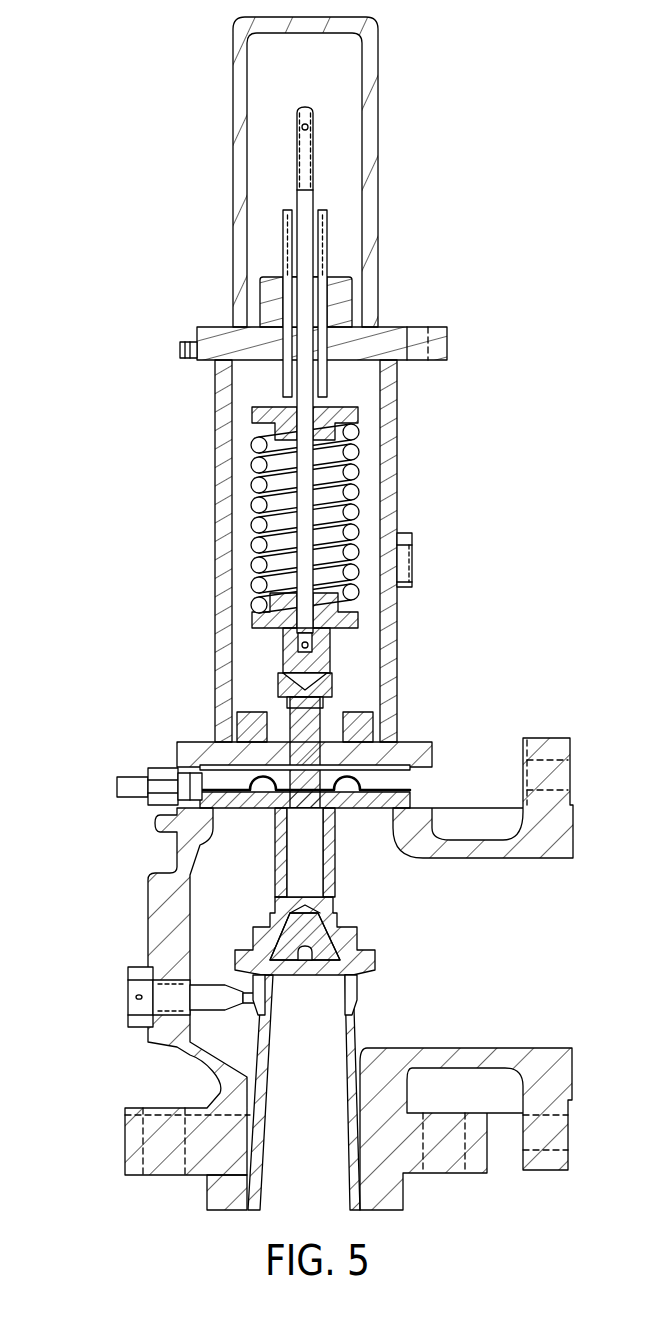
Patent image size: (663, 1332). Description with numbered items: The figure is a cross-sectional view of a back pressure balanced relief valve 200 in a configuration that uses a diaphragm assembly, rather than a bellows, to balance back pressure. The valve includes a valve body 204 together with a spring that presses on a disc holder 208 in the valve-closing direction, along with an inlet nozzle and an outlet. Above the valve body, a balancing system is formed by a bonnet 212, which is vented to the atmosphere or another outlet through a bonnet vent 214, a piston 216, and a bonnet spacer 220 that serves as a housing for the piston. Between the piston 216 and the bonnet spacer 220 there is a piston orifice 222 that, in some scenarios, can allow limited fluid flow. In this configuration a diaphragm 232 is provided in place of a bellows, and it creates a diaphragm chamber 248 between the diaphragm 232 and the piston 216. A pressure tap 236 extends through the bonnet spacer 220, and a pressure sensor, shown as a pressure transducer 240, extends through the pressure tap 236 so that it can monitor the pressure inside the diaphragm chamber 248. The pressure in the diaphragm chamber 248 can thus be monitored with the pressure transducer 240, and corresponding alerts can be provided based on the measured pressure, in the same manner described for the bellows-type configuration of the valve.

The back pressure balanced relief valve 200 is at (143, 131).
The valve body 204 is at (215, 505).
The disc holder 208 is at (293, 887).
The bonnet 212 is at (397, 445).
The bonnet vent 214 is at (398, 557).
The piston 216 is at (335, 715).
The bonnet spacer 220 is at (407, 777).
The piston orifice 222 is at (263, 757).
The diaphragm 232 is at (352, 768).
The pressure tap 236 is at (210, 782).
The pressure transducer 240 is at (118, 784).
The diaphragm chamber 248 is at (230, 770).